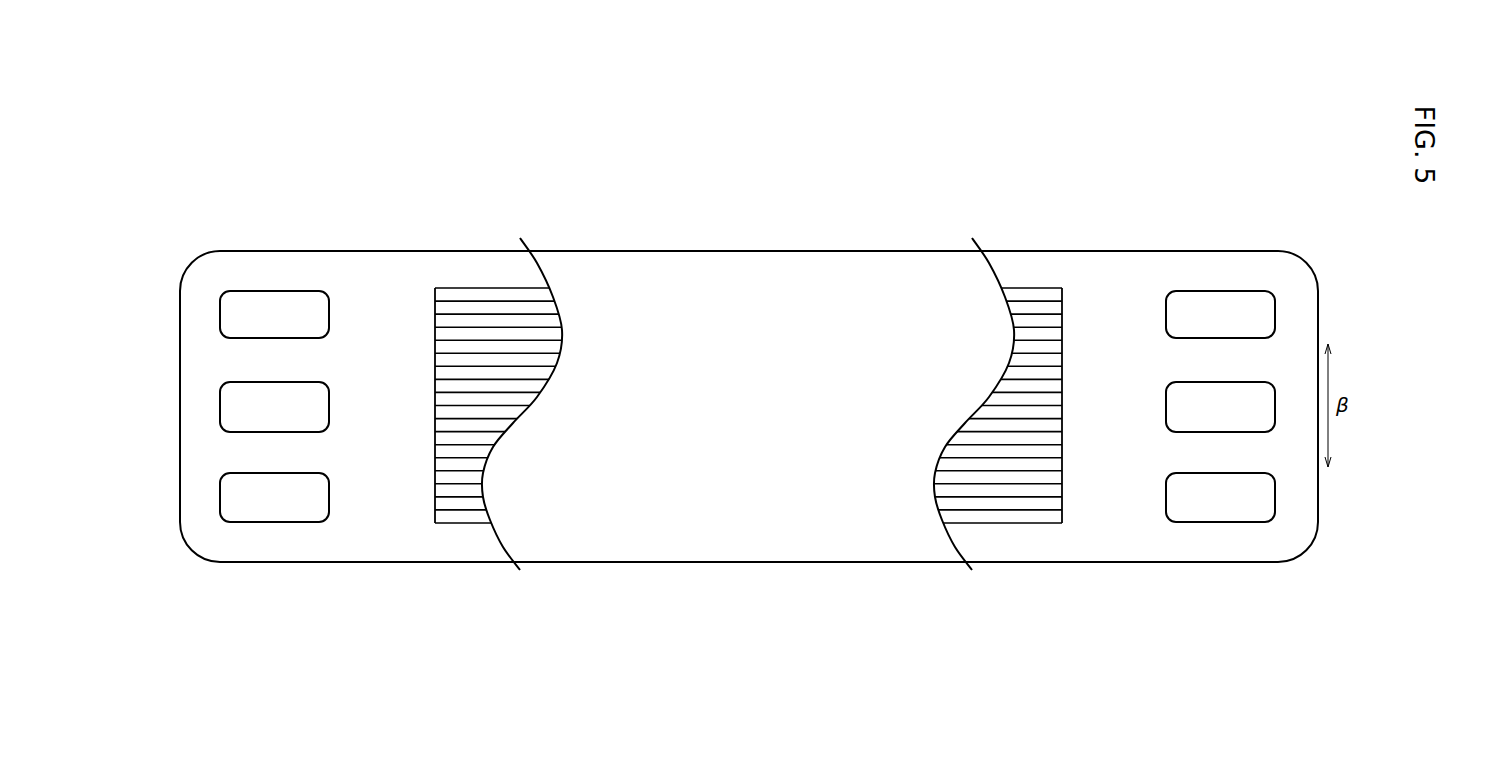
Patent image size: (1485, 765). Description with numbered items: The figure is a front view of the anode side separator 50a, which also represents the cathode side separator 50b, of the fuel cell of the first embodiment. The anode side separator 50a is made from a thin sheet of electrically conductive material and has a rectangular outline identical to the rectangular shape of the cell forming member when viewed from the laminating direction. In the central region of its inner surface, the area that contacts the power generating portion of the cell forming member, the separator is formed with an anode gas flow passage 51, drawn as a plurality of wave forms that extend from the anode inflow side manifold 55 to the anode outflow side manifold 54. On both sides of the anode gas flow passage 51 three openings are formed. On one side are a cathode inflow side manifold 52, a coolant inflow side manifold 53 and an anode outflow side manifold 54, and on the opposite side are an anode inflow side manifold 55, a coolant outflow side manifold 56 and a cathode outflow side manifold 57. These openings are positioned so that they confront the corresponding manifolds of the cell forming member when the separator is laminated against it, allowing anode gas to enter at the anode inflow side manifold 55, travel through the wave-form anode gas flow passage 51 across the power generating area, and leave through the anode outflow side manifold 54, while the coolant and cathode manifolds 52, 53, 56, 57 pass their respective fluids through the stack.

The anode side separator 50a is at (749, 359).
The cathode side separator 50b is at (232, 247).
The anode gas flow passage 51 is at (1000, 496).
The cathode inflow side manifold 52 is at (220, 315).
The coolant inflow side manifold 53 is at (220, 408).
The anode outflow side manifold 54 is at (220, 500).
The anode inflow side manifold 55 is at (1229, 290).
The coolant outflow side manifold 56 is at (1245, 435).
The cathode outflow side manifold 57 is at (1191, 524).